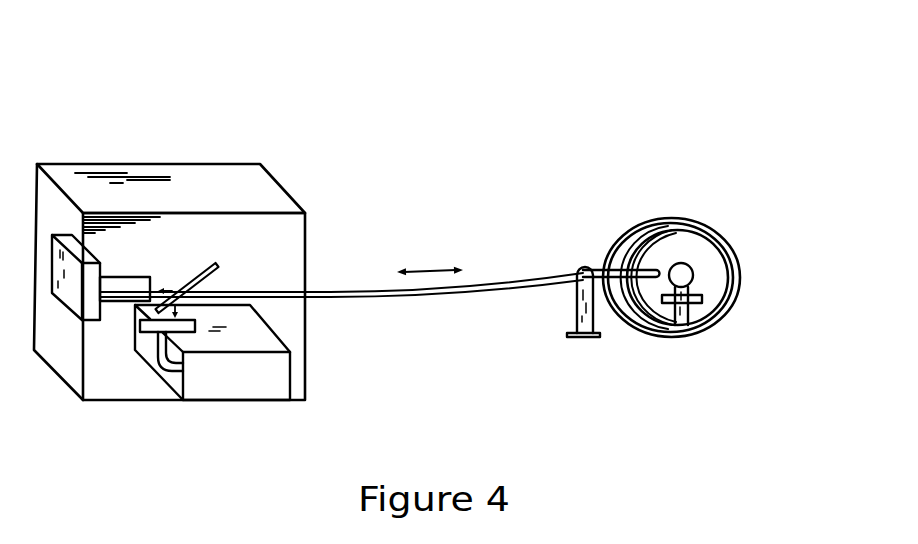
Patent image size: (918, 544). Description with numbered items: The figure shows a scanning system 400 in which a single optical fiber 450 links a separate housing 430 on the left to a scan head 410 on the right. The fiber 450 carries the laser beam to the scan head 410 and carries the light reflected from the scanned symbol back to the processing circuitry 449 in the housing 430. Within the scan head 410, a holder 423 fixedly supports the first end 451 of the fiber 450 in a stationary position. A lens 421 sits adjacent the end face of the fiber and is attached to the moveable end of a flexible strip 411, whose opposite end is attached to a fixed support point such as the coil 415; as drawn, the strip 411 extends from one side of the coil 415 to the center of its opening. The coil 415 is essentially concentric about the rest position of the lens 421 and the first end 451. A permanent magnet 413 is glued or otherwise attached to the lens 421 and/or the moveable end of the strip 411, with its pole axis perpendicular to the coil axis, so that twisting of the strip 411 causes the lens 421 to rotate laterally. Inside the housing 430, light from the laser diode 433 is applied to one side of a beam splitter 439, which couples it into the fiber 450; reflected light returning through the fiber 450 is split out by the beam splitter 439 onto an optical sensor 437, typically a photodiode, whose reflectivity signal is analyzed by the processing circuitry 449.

The scanning system 400 is at (403, 241).
The scan head 410 is at (651, 231).
The flexible strip 411 is at (682, 317).
The permanent magnet 413 is at (697, 298).
The coil 415 is at (703, 228).
The lens 421 is at (688, 272).
The holder 423 is at (578, 314).
The housing 430 is at (161, 271).
The laser diode 433 is at (107, 290).
The optical sensor 437 is at (140, 402).
The beam splitter 439 is at (217, 266).
The processing circuitry 449 is at (259, 383).
The optical fiber 450 is at (443, 293).
The first end 451 is at (660, 271).